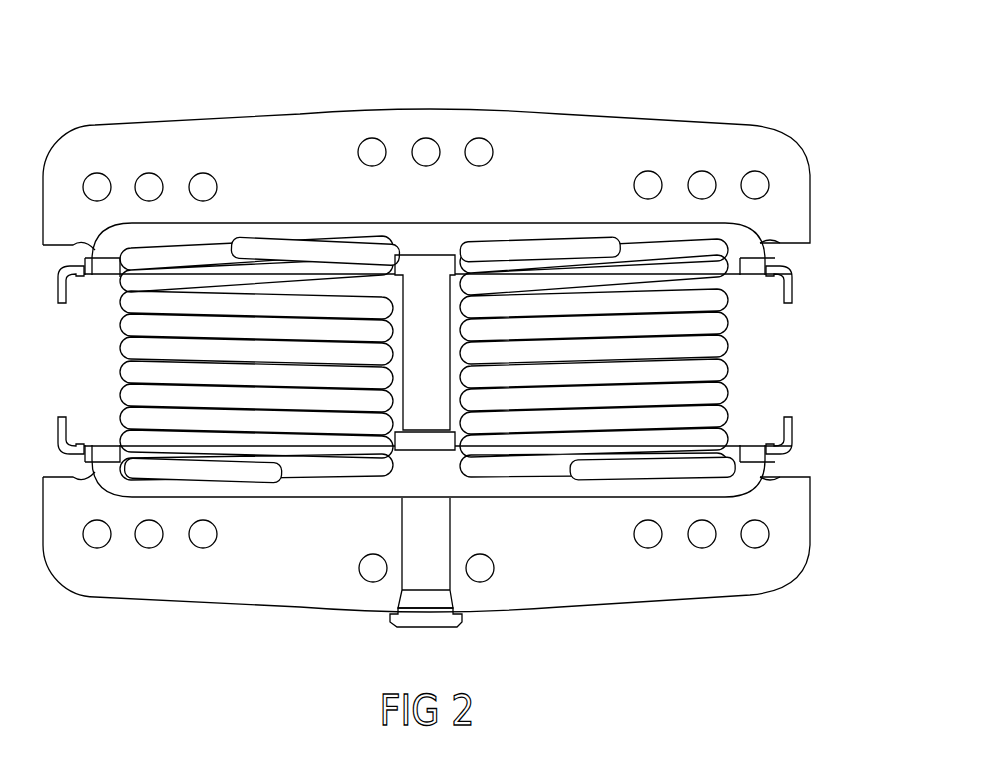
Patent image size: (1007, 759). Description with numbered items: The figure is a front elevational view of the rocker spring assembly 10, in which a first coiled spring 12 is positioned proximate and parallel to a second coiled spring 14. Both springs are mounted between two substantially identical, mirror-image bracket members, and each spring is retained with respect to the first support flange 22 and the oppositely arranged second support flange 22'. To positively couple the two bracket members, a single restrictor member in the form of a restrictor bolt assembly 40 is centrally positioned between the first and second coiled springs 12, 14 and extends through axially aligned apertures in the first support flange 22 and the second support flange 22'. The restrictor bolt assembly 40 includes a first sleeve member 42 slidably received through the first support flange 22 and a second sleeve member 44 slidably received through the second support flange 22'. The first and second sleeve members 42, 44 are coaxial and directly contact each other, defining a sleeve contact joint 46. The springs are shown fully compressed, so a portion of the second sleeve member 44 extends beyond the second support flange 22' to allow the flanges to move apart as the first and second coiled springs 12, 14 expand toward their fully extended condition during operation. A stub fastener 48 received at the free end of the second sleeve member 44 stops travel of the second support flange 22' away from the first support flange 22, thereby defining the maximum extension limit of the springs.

The rocker spring assembly 10 is at (699, 95).
The first coiled spring 12 is at (130, 367).
The second coiled spring 14 is at (723, 387).
The first support flange 22 is at (451, 280).
The second support flange 22' is at (454, 427).
The restrictor bolt assembly 40 is at (472, 516).
The first sleeve member 42 is at (427, 308).
The second sleeve member 44 is at (440, 567).
The sleeve contact joint 46 is at (424, 432).
The stub fastener 48 is at (415, 627).